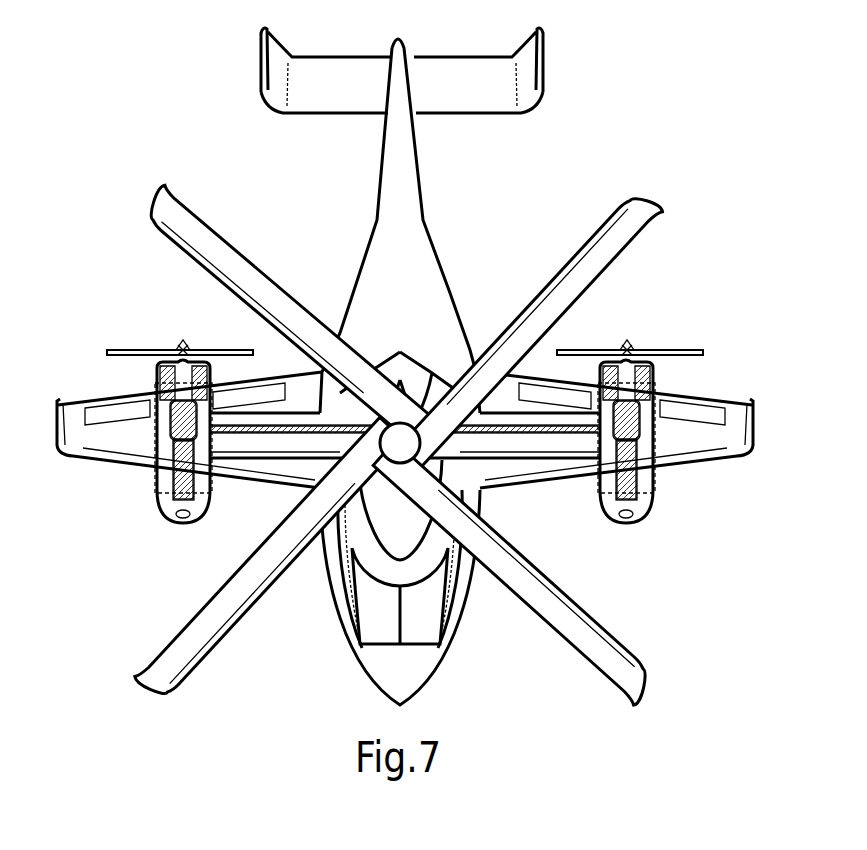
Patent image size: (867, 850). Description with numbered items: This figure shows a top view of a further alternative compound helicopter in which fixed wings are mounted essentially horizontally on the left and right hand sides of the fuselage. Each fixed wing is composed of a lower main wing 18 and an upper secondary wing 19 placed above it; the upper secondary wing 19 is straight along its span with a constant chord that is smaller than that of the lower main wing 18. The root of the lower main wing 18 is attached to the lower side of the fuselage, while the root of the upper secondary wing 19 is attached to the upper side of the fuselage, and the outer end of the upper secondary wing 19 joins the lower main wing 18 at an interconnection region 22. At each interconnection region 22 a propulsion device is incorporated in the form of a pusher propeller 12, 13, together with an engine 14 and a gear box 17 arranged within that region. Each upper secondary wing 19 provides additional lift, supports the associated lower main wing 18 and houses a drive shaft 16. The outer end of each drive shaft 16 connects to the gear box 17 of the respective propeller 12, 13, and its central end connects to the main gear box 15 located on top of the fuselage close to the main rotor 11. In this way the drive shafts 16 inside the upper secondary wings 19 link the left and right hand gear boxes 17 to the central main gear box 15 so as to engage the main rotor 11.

The main rotor 11 is at (400, 412).
The pusher propeller 12 is at (628, 349).
The pusher propeller 13 is at (181, 348).
The engine 14 is at (181, 478).
The main gear box 15 is at (400, 456).
The drive shaft 16 is at (283, 462).
The gear box 17 is at (176, 420).
The lower main wing 18 is at (263, 384).
The upper secondary wing 19 is at (260, 434).
The interconnection region 22 is at (156, 495).